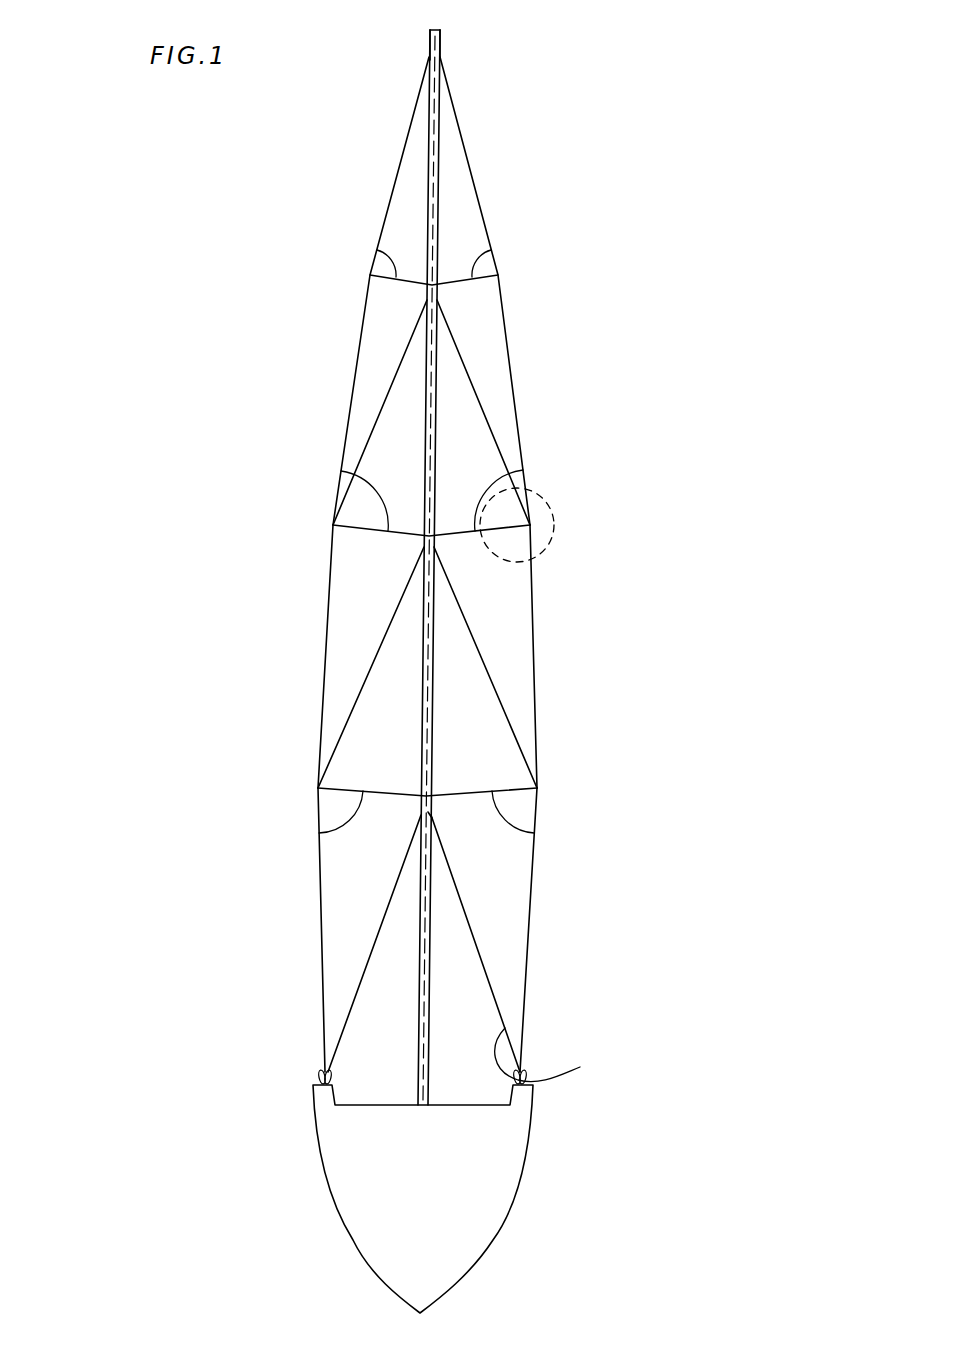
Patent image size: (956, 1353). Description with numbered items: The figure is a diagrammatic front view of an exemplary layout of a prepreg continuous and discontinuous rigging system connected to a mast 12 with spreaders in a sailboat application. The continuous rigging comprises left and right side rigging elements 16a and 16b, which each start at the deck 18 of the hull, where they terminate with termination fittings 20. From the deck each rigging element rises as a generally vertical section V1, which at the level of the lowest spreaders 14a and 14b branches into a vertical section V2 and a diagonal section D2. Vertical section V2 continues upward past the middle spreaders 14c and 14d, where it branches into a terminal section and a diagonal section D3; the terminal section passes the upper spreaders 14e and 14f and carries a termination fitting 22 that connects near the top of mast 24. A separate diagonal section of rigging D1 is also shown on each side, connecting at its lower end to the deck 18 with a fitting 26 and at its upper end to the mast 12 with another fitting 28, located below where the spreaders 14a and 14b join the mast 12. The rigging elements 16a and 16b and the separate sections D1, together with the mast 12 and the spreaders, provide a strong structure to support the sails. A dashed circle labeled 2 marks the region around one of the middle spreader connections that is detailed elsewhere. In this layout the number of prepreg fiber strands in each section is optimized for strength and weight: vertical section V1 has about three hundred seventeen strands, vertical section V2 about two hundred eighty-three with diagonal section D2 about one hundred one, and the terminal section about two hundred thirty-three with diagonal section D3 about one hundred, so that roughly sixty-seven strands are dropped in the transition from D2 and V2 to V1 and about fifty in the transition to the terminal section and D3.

The mast 12 is at (420, 1041).
The top of mast 24 is at (438, 39).
The termination fitting 22 is at (443, 62).
The diagonal section D3 is at (372, 410).
The spreader 14e is at (374, 251).
The spreader 14f is at (491, 252).
The spreader 14c is at (372, 487).
The spreader 14d is at (500, 490).
The section view indicator 2 is at (550, 490).
The vertical section V2 is at (323, 669).
The diagonal section D2 is at (382, 642).
The spreader 14a is at (319, 833).
The spreader 14b is at (534, 832).
The fitting 28 is at (441, 818).
The left side rigging element 16a is at (195, 901).
The right side rigging element 16b is at (660, 905).
The vertical section V1 is at (322, 956).
The separate diagonal section of rigging D1 is at (372, 942).
The fitting 26 is at (505, 1028).
The termination fitting 20 is at (523, 1080).
The deck 18 is at (523, 1096).